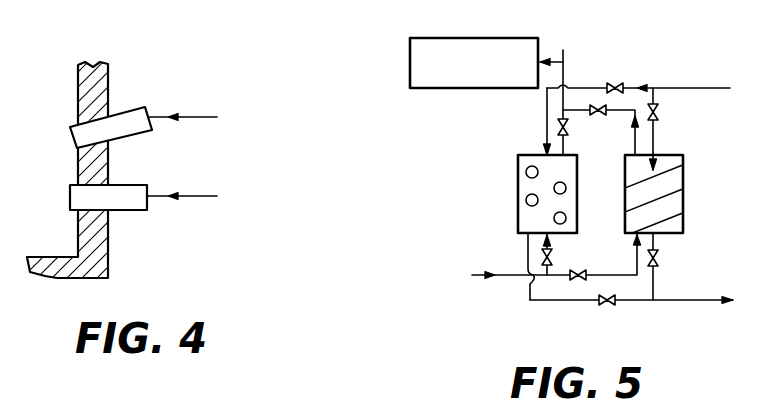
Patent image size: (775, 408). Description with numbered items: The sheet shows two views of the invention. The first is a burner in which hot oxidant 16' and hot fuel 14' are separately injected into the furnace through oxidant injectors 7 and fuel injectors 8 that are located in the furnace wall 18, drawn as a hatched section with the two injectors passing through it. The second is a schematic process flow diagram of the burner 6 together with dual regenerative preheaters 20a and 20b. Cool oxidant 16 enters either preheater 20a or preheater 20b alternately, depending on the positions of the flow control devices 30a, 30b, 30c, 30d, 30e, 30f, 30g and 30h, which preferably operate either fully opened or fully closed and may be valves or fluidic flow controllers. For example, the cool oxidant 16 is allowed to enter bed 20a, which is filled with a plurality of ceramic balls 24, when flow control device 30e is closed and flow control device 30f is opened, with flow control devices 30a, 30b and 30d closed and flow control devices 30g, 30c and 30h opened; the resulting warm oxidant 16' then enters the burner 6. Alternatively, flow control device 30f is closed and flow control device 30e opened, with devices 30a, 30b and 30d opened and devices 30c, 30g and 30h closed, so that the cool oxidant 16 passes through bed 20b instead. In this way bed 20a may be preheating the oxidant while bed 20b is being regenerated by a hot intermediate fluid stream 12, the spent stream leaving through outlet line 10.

In FIG. 4, the furnace wall 18 is at (108, 80).
In FIG. 4, the oxidant injectors 7 is at (135, 105).
In FIG. 4, the fuel injectors 8 is at (140, 182).
In FIG. 4, the hot oxidant 16' is at (200, 105).
In FIG. 4, the hot fuel 14' is at (199, 212).
In FIG. 5, the burner 6 is at (505, 37).
In FIG. 5, the cool oxidant 16 is at (548, 170).
In FIG. 5, the hot intermediate fluid stream 12 is at (713, 88).
In FIG. 5, the outlet line 10 is at (688, 303).
In FIG. 5, the preheater 20a is at (512, 192).
In FIG. 5, the preheater 20b is at (683, 197).
In FIG. 5, the ceramic balls 24 is at (525, 170).
In FIG. 5, the flow control device 30a is at (612, 86).
In FIG. 5, the flow control device 30b is at (599, 116).
In FIG. 5, the flow control device 30c is at (661, 258).
In FIG. 5, the flow control device 30d is at (608, 307).
In FIG. 5, the flow control device 30e is at (574, 280).
In FIG. 5, the flow control device 30f is at (555, 258).
In FIG. 5, the flow control device 30g is at (661, 112).
In FIG. 5, the flow control device 30h is at (558, 127).